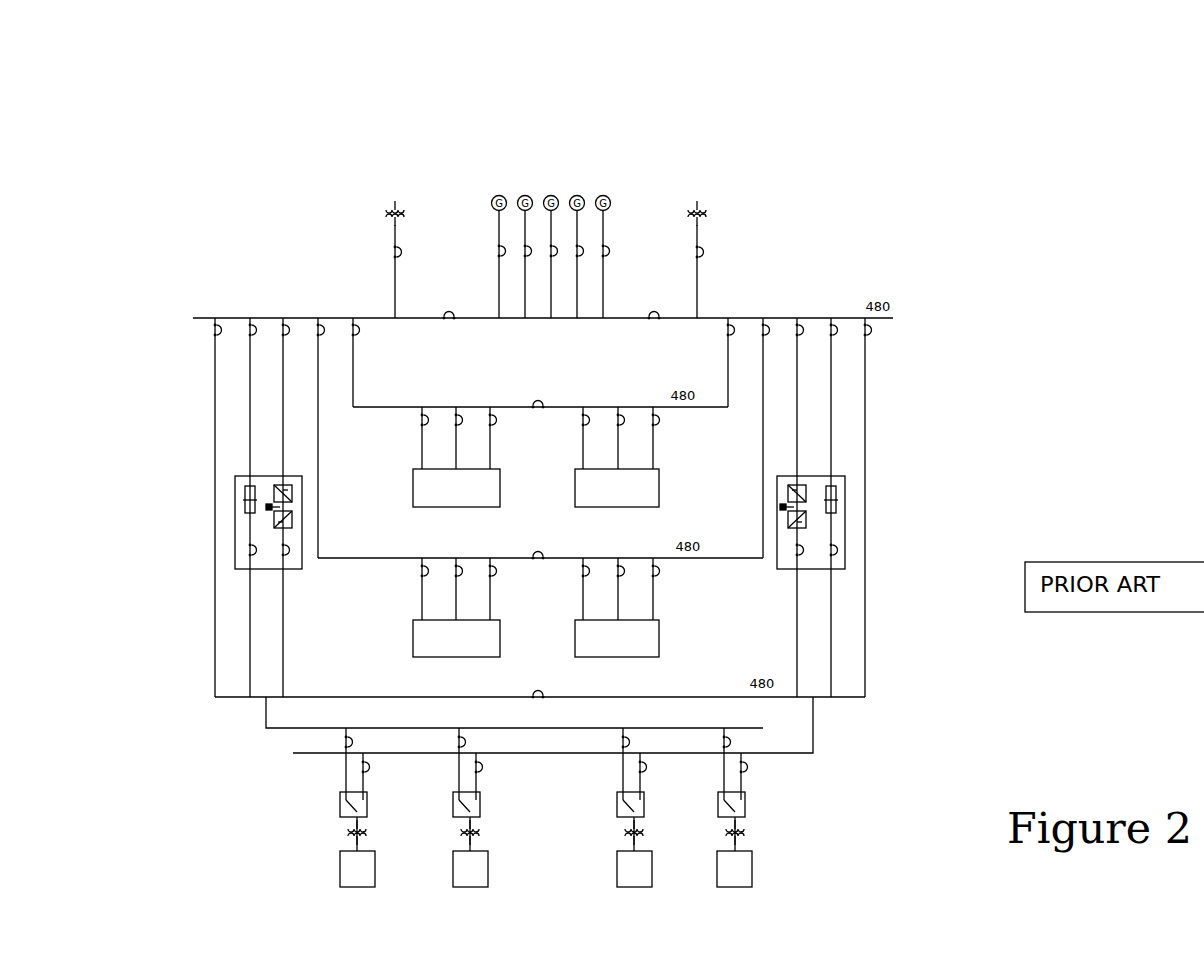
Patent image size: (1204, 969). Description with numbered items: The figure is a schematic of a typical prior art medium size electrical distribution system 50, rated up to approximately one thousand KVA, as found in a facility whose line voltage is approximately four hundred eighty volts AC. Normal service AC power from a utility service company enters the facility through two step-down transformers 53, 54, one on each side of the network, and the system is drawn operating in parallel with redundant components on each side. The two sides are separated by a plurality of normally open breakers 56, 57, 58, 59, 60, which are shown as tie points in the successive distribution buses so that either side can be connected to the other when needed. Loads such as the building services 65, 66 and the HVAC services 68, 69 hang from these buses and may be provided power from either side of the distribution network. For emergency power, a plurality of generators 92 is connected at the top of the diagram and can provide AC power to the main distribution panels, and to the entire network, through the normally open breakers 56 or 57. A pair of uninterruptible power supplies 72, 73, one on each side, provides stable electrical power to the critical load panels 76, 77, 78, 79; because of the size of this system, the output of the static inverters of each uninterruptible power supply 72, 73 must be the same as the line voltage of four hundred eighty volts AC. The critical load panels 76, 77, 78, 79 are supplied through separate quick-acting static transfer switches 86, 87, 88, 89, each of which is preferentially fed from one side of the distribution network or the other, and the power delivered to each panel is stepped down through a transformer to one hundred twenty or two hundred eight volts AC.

The electrical distribution system 50 is at (893, 217).
The step-down transformer 53 is at (383, 212).
The step-down transformer 54 is at (710, 208).
The normally open breaker 56 is at (449, 312).
The normally open breaker 57 is at (652, 312).
The normally open breaker 58 is at (545, 402).
The normally open breaker 59 is at (545, 553).
The normally open breaker 60 is at (538, 692).
The building service 65 is at (413, 487).
The building service 66 is at (660, 487).
The HVAC service 68 is at (413, 633).
The HVAC service 69 is at (660, 630).
The uninterruptible power supply 72 is at (243, 517).
The uninterruptible power supply 73 is at (833, 520).
The critical load panel 76 is at (342, 877).
The critical load panel 77 is at (457, 876).
The critical load panel 78 is at (617, 877).
The critical load panel 79 is at (725, 872).
The static transfer switch 86 is at (340, 800).
The static transfer switch 87 is at (453, 800).
The static transfer switch 88 is at (617, 802).
The static transfer switch 89 is at (720, 802).
The generators 92 is at (557, 163).